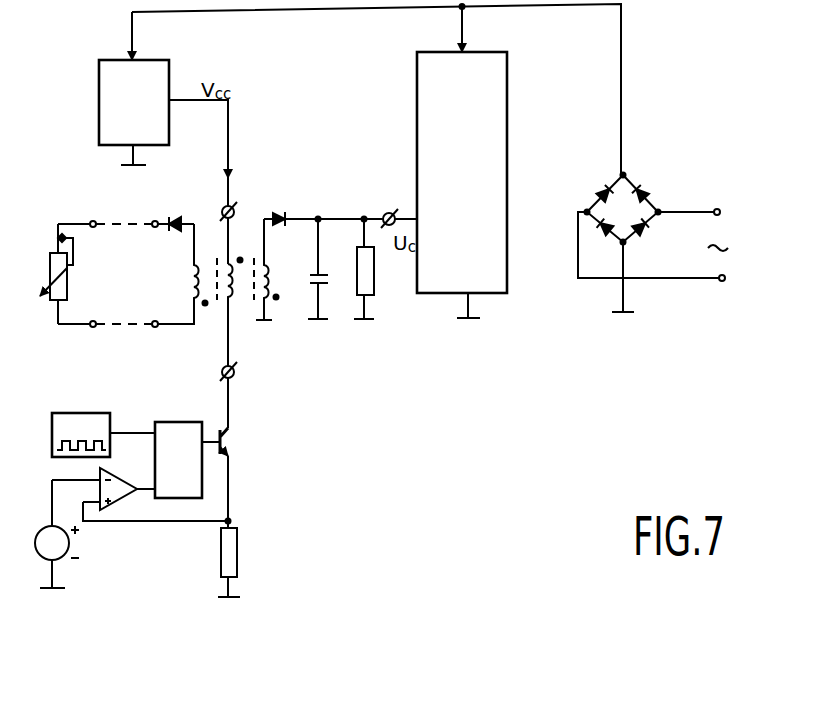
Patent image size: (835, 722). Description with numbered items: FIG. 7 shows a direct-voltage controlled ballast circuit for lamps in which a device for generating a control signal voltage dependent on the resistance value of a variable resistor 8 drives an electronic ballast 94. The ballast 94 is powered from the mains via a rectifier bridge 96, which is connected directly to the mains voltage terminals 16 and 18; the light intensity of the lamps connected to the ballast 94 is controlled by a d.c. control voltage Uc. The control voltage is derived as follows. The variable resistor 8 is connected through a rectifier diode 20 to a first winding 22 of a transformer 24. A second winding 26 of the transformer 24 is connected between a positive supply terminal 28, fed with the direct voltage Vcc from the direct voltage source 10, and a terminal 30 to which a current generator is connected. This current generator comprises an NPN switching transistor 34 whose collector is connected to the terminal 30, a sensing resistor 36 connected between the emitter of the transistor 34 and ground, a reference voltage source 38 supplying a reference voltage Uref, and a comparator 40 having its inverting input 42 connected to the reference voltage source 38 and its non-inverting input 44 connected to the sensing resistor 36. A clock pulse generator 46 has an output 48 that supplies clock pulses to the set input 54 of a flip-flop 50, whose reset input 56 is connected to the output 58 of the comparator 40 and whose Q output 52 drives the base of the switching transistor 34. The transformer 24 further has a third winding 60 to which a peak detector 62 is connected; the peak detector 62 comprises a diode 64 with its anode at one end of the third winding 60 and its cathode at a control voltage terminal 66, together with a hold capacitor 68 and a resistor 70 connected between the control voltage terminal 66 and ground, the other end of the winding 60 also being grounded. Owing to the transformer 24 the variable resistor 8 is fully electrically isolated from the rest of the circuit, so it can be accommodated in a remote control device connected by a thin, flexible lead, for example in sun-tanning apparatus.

The variable resistor 8 is at (62, 291).
The direct voltage source 10 is at (155, 76).
The mains voltage terminal 16 is at (717, 208).
The mains voltage terminal 18 is at (722, 282).
The rectifier diode 20 is at (176, 242).
The first winding 22 is at (196, 282).
The transformer 24 is at (218, 320).
The second winding 26 is at (232, 300).
The positive supply terminal 28 is at (223, 206).
The terminal 30 is at (236, 376).
The NPN switching transistor 34 is at (233, 441).
The sensing resistor 36 is at (239, 546).
The reference voltage source 38 is at (46, 556).
The comparator 40 is at (117, 482).
The inverting input 42 is at (100, 476).
The non-inverting input 44 is at (95, 502).
The clock pulse generator 46 is at (82, 413).
The output 48 is at (113, 432).
The flip-flop 50 is at (185, 421).
The Q output 52 is at (206, 441).
The set input 54 is at (149, 432).
The reset input 56 is at (150, 488).
The output 58 is at (135, 490).
The third winding 60 is at (268, 276).
The peak detector 62 is at (349, 250).
The diode 64 is at (275, 213).
The control voltage terminal 66 is at (390, 210).
The hold capacitor 68 is at (323, 289).
The resistor 70 is at (366, 276).
The electronic ballast 94 is at (493, 139).
The rectifier bridge 96 is at (632, 222).